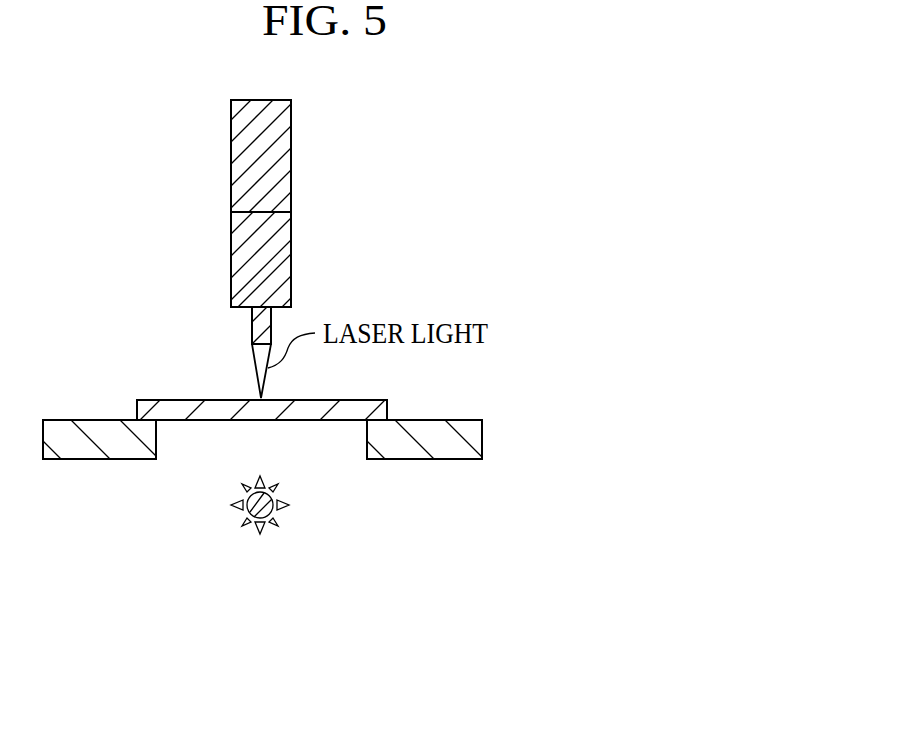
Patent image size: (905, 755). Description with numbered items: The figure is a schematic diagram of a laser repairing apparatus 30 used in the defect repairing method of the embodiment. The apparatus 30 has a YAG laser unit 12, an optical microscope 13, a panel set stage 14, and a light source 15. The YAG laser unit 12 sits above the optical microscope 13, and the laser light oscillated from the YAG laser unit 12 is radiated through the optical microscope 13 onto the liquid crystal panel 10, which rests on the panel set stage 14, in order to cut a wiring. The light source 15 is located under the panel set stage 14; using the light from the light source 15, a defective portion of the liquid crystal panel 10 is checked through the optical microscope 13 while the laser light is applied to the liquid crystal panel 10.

The laser repairing apparatus 30 is at (429, 171).
The YAG laser unit 12 is at (283, 140).
The optical microscope 13 is at (283, 251).
The liquid crystal panel 10 is at (373, 410).
The panel set stage 14 is at (475, 433).
The light source 15 is at (284, 505).